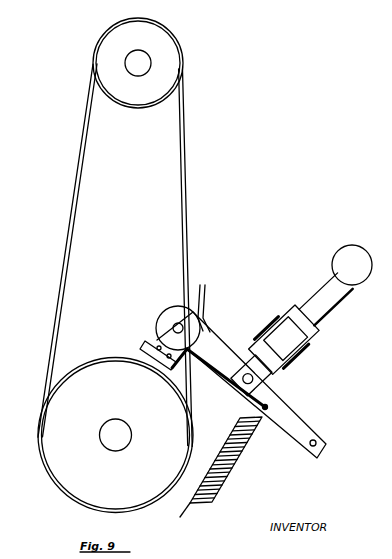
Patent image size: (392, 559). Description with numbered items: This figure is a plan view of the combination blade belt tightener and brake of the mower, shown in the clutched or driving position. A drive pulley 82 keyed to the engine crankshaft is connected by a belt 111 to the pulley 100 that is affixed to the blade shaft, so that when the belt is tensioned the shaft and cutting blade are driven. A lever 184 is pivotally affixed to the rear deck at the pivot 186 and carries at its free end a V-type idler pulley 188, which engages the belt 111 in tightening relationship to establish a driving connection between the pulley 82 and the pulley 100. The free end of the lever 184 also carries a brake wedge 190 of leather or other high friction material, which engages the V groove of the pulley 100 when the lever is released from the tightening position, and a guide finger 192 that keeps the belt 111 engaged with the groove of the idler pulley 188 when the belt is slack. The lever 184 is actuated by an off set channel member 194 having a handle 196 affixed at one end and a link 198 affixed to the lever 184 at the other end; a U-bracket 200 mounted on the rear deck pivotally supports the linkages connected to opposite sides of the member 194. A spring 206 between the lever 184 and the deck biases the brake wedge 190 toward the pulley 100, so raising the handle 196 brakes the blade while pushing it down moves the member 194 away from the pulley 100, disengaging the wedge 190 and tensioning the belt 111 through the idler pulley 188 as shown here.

The drive pulley 82 is at (168, 50).
The pulley 100 is at (63, 477).
The belt means 111 is at (192, 198).
The lever 184 is at (295, 413).
The pivot 186 is at (323, 437).
The V-type idler pulley 188 is at (170, 307).
The brake wedge 190 is at (153, 350).
The guide finger 192 is at (212, 297).
The off set channel member 194 is at (318, 298).
The handle 196 is at (348, 255).
The link 198 is at (245, 362).
The U-bracket 200 is at (310, 347).
The spring 206 is at (235, 463).